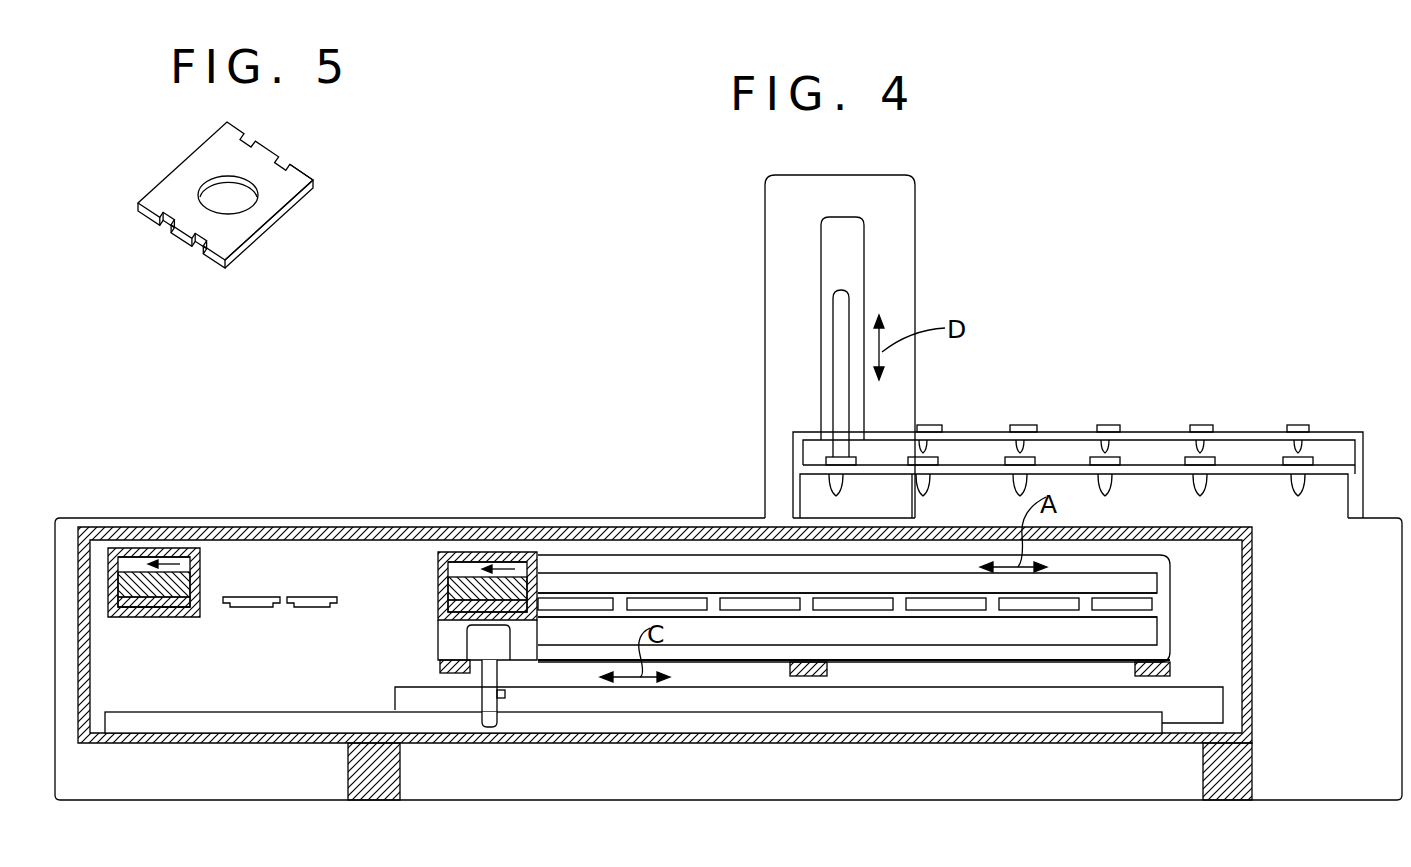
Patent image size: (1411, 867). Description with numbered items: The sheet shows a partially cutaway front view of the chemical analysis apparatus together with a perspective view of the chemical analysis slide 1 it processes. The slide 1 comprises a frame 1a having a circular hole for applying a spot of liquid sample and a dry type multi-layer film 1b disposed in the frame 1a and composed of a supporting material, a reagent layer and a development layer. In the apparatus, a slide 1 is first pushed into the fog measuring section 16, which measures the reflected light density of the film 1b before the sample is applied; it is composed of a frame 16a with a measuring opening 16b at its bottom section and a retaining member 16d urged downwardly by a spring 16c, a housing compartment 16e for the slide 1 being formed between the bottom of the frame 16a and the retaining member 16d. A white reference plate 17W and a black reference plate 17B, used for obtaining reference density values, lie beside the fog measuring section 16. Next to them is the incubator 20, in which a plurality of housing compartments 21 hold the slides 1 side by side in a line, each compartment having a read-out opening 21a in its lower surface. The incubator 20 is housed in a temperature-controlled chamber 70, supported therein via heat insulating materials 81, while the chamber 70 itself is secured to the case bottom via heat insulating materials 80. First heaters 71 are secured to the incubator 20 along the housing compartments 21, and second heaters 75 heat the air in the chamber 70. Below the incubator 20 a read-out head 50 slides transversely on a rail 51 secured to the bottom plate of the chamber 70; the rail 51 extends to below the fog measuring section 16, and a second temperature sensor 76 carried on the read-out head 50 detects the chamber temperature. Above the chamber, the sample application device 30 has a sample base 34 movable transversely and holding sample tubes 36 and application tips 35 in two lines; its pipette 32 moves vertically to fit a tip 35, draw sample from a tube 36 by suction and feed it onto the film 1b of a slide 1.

In FIG. 5, the chemical analysis slide 1 is at (166, 150).
In FIG. 4, the chemical analysis slide 1 is at (538, 634).
In FIG. 5, the frame 1a is at (303, 177).
In FIG. 5, the dry type multi-layer film 1b is at (243, 197).
In FIG. 4, the fog measuring section 16 is at (185, 575).
In FIG. 4, the frame 16a is at (197, 580).
In FIG. 4, the measuring opening 16b is at (155, 618).
In FIG. 4, the spring 16c is at (165, 562).
In FIG. 4, the retaining member 16d is at (152, 558).
In FIG. 4, the housing compartment 16e is at (118, 618).
In FIG. 4, the black reference plate 17B is at (263, 610).
In FIG. 4, the white reference plate 17W is at (313, 610).
In FIG. 4, the incubator 20 is at (673, 556).
In FIG. 4, the housing compartments 21 is at (785, 608).
In FIG. 4, the read-out opening 21a is at (438, 642).
In FIG. 4, the sample application device 30 is at (935, 235).
In FIG. 4, the pipette 32 is at (840, 326).
In FIG. 4, the sample base 34 is at (1347, 435).
In FIG. 4, the application tips 35 is at (932, 427).
In FIG. 4, the sample tubes 36 is at (840, 492).
In FIG. 4, the read-out head 50 is at (483, 675).
In FIG. 4, the rail 51 is at (762, 735).
In FIG. 4, the temperature-controlled chamber 70 is at (540, 530).
In FIG. 4, the first heaters 71 is at (604, 578).
In FIG. 4, the second heaters 75 is at (1215, 705).
In FIG. 4, the second temperature sensor 76 is at (505, 696).
In FIG. 4, the heat insulating materials 80 is at (348, 762).
In FIG. 4, the heat insulating materials 81 is at (438, 665).